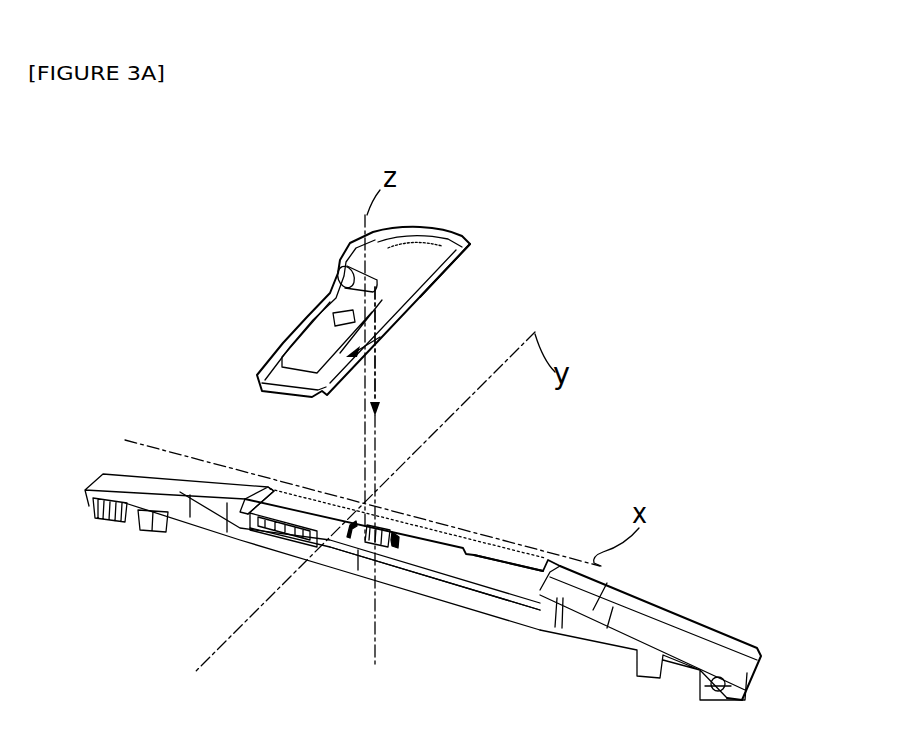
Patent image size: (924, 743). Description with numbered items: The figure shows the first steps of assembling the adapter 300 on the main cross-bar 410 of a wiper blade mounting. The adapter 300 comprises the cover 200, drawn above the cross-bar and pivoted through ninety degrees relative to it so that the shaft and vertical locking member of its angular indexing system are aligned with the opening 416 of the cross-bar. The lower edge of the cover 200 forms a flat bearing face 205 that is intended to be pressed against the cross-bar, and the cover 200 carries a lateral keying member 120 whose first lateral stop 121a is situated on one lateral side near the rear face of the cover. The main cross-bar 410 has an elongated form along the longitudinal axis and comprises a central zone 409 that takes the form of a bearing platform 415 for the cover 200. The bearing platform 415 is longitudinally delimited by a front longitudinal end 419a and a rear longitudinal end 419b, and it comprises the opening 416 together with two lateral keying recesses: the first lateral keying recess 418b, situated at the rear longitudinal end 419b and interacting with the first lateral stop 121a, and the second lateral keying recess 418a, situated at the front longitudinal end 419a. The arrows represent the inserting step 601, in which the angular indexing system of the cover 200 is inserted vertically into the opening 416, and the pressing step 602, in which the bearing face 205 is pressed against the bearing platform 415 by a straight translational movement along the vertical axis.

The cover 200 is at (379, 266).
The adapter 300 is at (302, 233).
The bearing face 205 is at (421, 290).
The lateral keying member 120 is at (465, 325).
The first lateral stop 121a is at (380, 337).
The inserting step 601 is at (479, 368).
The pressing step 602 is at (375, 406).
The main cross-bar 410 is at (444, 548).
The central zone 409 is at (437, 617).
The bearing platform 415 is at (469, 566).
The opening 416 is at (390, 556).
The second lateral keying recess 418a is at (280, 540).
The first lateral keying recess 418b is at (516, 548).
The front longitudinal end 419a is at (264, 487).
The rear longitudinal end 419b is at (552, 553).